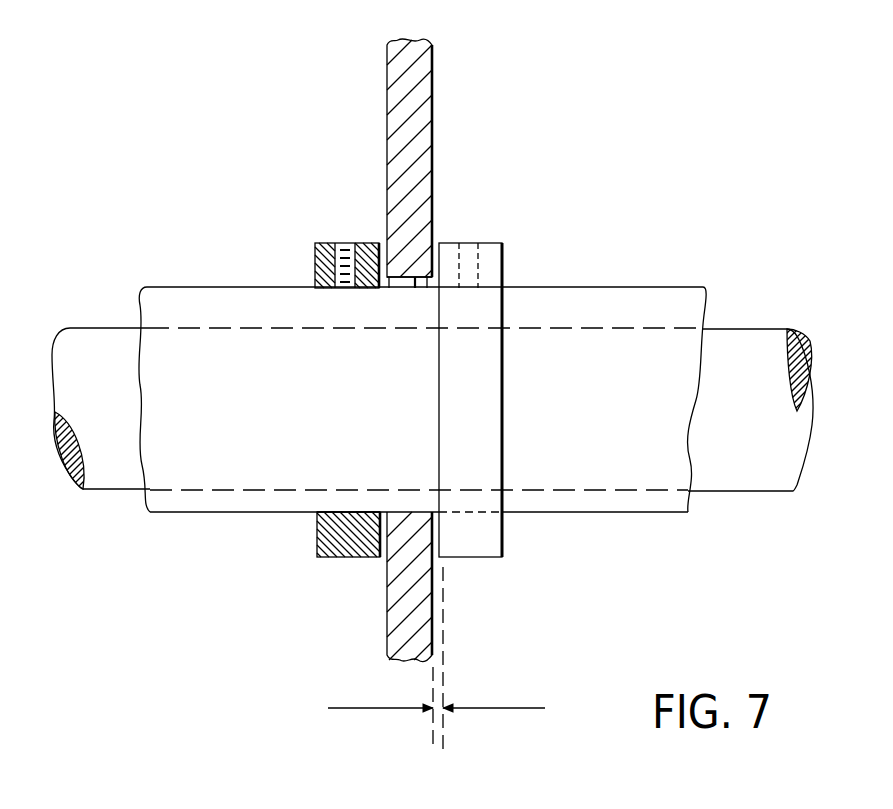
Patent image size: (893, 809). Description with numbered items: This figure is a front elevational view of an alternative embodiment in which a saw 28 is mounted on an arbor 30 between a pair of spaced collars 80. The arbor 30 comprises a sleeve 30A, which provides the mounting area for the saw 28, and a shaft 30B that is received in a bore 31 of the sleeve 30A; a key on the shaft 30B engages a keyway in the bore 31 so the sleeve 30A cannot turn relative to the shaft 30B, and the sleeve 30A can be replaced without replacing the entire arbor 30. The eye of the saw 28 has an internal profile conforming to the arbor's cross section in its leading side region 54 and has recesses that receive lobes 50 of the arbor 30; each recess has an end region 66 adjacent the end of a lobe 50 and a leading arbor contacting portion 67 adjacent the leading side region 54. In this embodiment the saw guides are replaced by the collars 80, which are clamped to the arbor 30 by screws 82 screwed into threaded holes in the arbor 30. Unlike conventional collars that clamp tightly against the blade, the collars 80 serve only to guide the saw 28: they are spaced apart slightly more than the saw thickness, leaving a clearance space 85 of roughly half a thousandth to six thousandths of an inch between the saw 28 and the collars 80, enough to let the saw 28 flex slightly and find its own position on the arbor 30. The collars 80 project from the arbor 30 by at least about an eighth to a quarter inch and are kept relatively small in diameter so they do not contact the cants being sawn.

The saw 28 is at (387, 117).
The arbor 30 is at (432, 368).
The sleeve 30A is at (435, 395).
The shaft 30B is at (432, 405).
The bore 31 is at (651, 490).
The lobes 50 is at (205, 287).
The leading side region 54 is at (300, 513).
The end region 66 is at (415, 284).
The leading arbor contacting portion 67 is at (350, 512).
The collars 80 is at (313, 258).
The screws 82 is at (338, 243).
The clearance space 85 is at (485, 706).